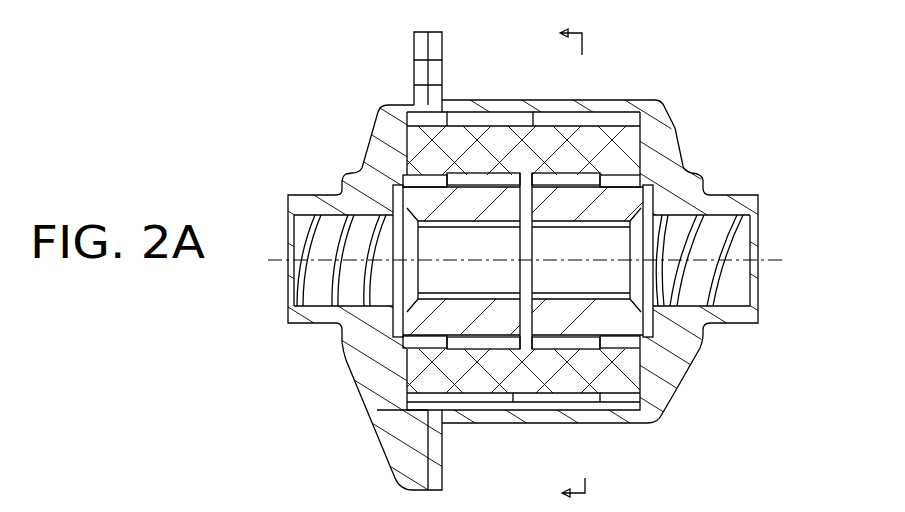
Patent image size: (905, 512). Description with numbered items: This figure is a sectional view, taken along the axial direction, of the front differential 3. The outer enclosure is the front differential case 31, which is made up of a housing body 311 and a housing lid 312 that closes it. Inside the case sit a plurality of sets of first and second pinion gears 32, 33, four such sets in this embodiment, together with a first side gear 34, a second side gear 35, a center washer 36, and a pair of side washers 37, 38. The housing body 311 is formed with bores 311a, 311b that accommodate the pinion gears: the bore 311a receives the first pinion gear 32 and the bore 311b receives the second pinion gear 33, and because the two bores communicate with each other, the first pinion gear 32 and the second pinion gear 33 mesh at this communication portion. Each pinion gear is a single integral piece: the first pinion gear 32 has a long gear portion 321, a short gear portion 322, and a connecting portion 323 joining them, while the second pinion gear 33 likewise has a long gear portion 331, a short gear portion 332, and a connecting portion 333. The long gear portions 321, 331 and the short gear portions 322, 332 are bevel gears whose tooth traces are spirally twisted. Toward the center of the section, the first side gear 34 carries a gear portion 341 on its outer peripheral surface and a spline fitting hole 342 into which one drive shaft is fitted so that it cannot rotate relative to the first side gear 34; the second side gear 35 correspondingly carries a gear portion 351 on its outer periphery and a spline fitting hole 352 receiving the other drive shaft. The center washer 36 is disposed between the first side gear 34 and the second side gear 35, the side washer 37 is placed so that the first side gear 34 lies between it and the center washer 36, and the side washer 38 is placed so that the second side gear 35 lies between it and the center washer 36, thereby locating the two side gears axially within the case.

The front differential 3 is at (342, 82).
The front differential case 31 is at (722, 345).
The housing body 311 is at (648, 424).
The bore 311a is at (641, 393).
The bore 311b is at (644, 124).
The housing lid 312 is at (367, 375).
The first pinion gear 32 is at (575, 460).
The long gear portion 321 is at (476, 388).
The short gear portion 322 is at (613, 398).
The connecting portion 323 is at (553, 380).
The second pinion gear 33 is at (573, 58).
The long gear portion 331 is at (565, 130).
The short gear portion 332 is at (425, 133).
The connecting portion 333 is at (517, 140).
The first side gear 34 is at (398, 183).
The gear portion 341 is at (412, 138).
The spline fitting hole 342 is at (427, 248).
The second side gear 35 is at (642, 198).
The gear portion 351 is at (650, 158).
The spline fitting hole 352 is at (620, 242).
The center washer 36 is at (558, 168).
The side washer 37 is at (362, 337).
The side washer 38 is at (660, 336).